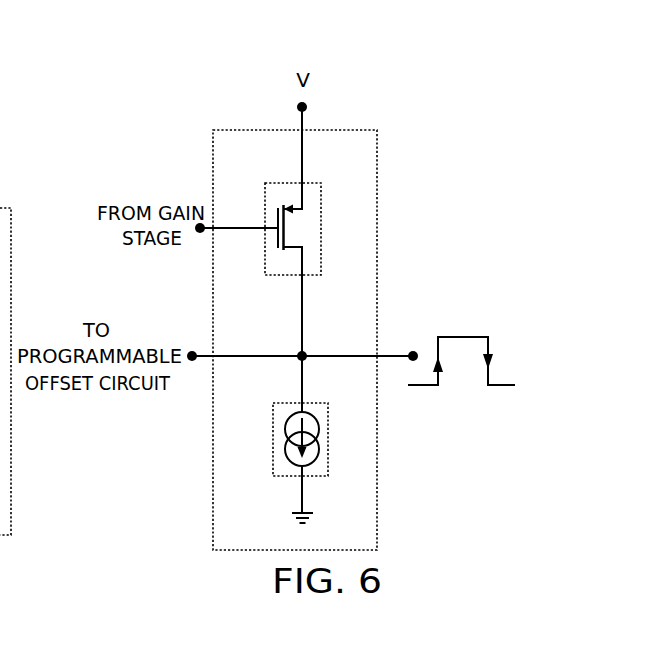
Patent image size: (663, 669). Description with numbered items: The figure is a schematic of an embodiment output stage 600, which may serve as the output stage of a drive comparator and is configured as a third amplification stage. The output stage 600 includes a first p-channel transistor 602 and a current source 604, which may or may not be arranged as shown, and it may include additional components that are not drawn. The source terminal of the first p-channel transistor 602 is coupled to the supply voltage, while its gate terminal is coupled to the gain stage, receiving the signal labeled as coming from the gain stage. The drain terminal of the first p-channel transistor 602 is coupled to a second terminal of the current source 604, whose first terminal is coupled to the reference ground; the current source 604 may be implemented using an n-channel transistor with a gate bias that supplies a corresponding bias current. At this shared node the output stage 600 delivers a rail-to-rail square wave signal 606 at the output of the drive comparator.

The output stage 600 is at (466, 88).
The first p-channel transistor 602 is at (315, 274).
The current source 604 is at (277, 478).
The rail-to-rail square wave signal 606 is at (472, 320).